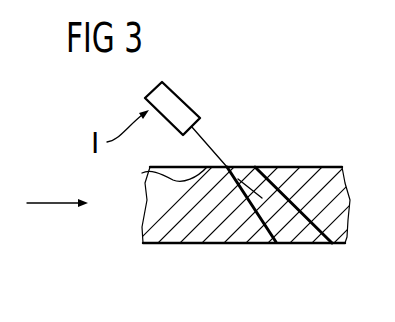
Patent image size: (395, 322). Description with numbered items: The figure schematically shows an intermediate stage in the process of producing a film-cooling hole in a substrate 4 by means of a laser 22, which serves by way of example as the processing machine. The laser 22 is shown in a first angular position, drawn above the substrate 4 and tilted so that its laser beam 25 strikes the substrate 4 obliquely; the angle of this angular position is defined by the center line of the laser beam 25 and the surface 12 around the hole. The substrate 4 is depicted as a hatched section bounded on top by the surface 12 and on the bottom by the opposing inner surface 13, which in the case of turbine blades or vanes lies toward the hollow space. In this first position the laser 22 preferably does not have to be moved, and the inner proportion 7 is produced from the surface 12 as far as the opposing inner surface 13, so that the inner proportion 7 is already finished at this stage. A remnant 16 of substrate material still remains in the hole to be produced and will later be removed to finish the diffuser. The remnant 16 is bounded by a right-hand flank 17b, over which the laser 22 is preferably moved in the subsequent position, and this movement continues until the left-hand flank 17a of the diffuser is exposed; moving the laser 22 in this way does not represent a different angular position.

The laser 22 is at (185, 103).
The laser beam 25 is at (205, 141).
The surface 12 is at (309, 166).
The opposing inner surface 13 is at (202, 244).
The substrate 4 is at (150, 199).
The remnant 16 is at (142, 173).
The inner proportion 7 is at (272, 207).
The left-hand flank 17a is at (236, 178).
The right-hand flank 17b is at (250, 165).